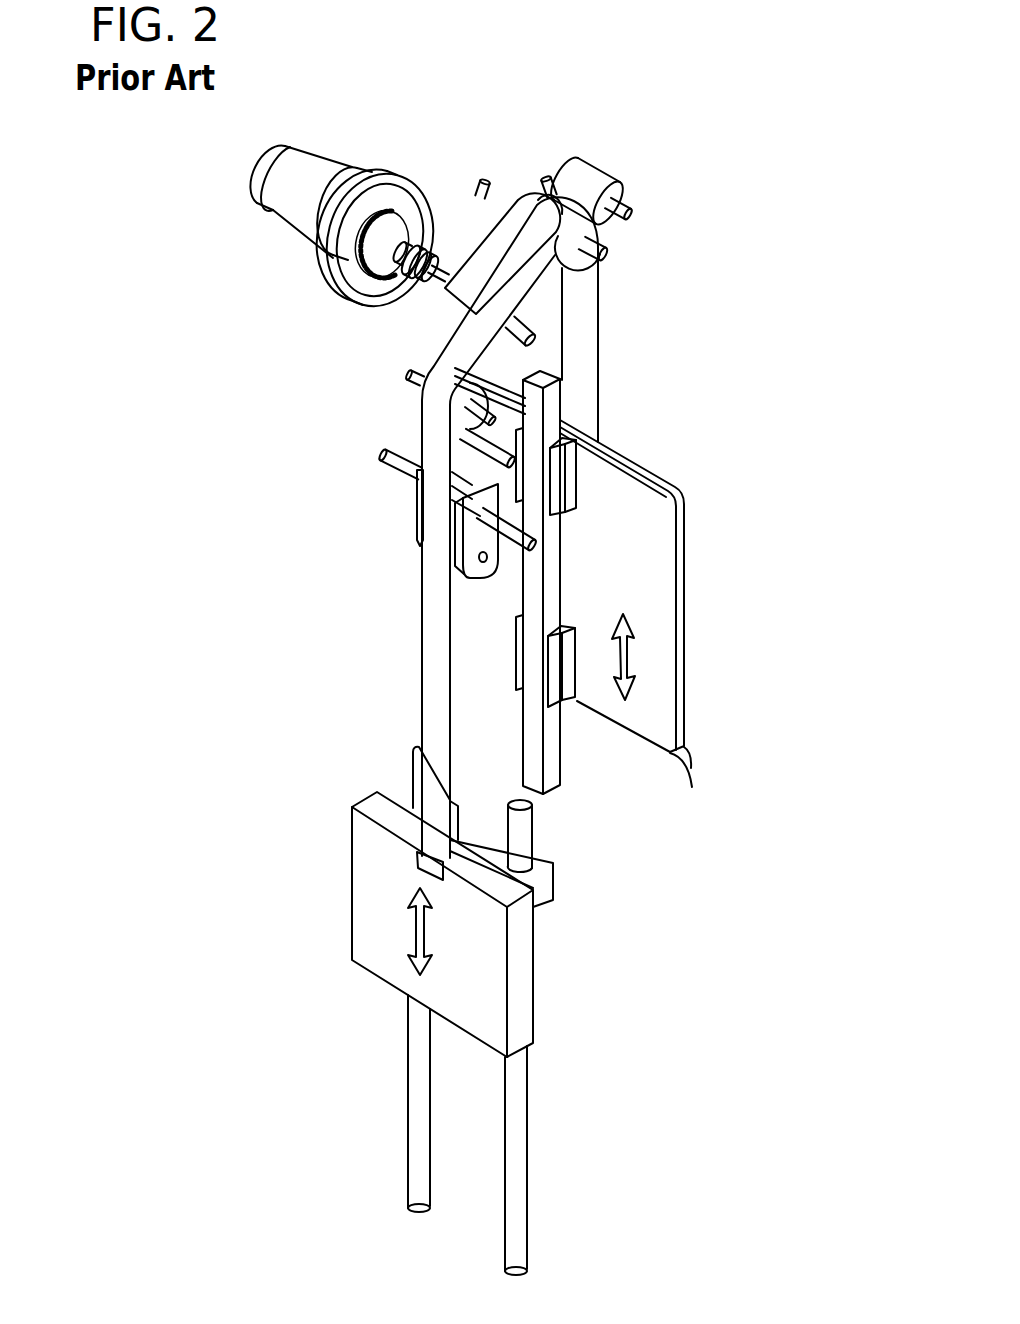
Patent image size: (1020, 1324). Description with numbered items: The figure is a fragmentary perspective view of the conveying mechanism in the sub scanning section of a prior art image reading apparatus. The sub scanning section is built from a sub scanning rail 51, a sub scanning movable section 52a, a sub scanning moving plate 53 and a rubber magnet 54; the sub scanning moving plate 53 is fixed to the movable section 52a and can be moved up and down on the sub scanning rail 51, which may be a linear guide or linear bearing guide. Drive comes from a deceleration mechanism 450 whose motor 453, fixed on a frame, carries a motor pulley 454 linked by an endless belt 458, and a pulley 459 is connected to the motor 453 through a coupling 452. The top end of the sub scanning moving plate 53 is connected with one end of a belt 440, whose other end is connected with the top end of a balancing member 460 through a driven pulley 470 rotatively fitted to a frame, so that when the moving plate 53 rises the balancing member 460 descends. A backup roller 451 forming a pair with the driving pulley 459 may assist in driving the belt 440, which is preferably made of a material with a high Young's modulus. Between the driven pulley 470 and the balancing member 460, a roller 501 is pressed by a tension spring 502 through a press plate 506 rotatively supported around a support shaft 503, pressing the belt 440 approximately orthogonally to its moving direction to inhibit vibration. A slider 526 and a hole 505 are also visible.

The deceleration mechanism 450 is at (517, 152).
The backup roller 451 is at (596, 178).
The coupling 452 is at (358, 307).
The motor 453 is at (280, 238).
The motor pulley 454 is at (418, 292).
The endless belt 458 is at (474, 244).
The pulley 459 is at (547, 196).
The driven pulley 470 is at (456, 412).
The roller 501 is at (458, 569).
The tension spring 502 is at (455, 489).
The support shaft 503 is at (385, 457).
The hole 505 is at (484, 563).
The press plate 506 is at (458, 528).
The sub scanning rail 51 is at (532, 732).
The sub scanning movable section 52a is at (570, 505).
The lower slider 526 is at (573, 712).
The sub scanning moving plate 53 is at (686, 782).
The rubber magnet 54 is at (686, 558).
The belt 440 is at (430, 727).
The balancing member 460 is at (360, 880).